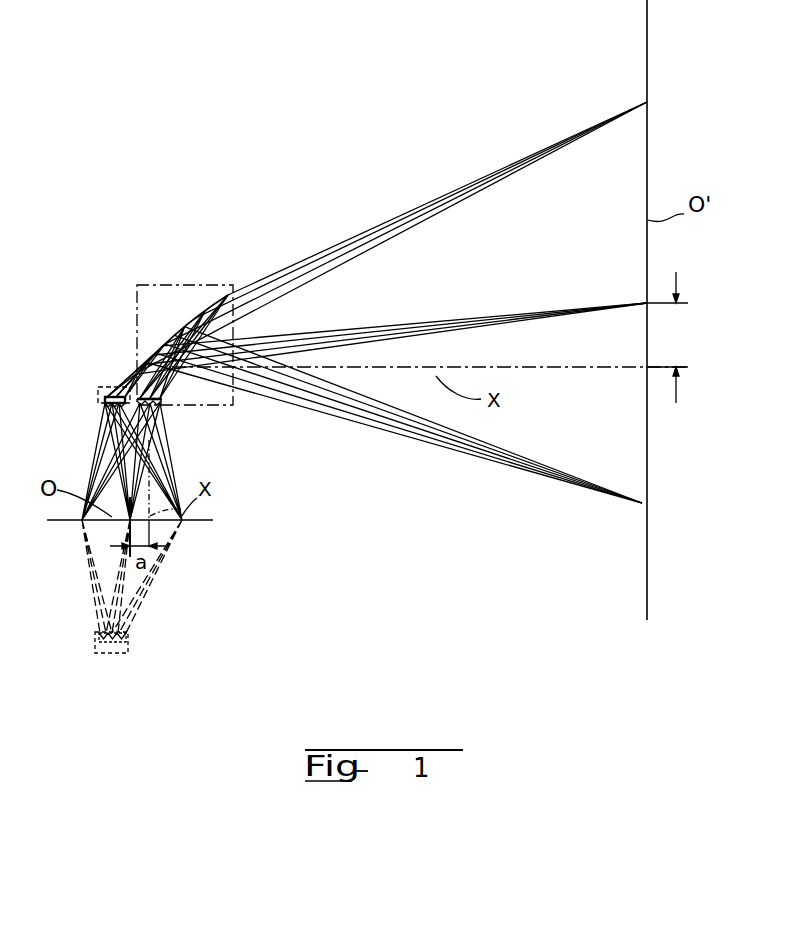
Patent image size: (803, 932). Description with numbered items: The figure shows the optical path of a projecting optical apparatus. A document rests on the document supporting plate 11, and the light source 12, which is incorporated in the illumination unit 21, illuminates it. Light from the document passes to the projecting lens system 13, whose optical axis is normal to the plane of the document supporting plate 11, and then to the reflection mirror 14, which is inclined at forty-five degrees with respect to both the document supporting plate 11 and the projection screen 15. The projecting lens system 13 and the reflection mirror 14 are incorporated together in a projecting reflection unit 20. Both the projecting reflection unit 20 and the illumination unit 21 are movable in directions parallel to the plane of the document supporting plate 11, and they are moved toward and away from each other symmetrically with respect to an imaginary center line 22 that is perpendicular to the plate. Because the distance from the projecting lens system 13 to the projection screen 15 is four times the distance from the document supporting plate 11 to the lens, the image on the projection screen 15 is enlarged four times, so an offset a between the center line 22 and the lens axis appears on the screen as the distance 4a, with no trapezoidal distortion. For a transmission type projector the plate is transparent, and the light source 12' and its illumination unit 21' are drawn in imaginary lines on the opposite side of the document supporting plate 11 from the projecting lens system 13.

The document supporting plate 11 is at (202, 523).
The light source 12 is at (116, 364).
The projecting lens system 13 is at (158, 401).
The reflection mirror 14 is at (178, 341).
The projection screen 15 is at (648, 70).
The projecting reflection unit 20 is at (196, 286).
The illumination unit 21 is at (97, 362).
The imaginary center line 22 is at (130, 588).
The illumination unit 21' is at (92, 663).
The light source 12' is at (116, 664).
The projected distance 4a is at (676, 341).